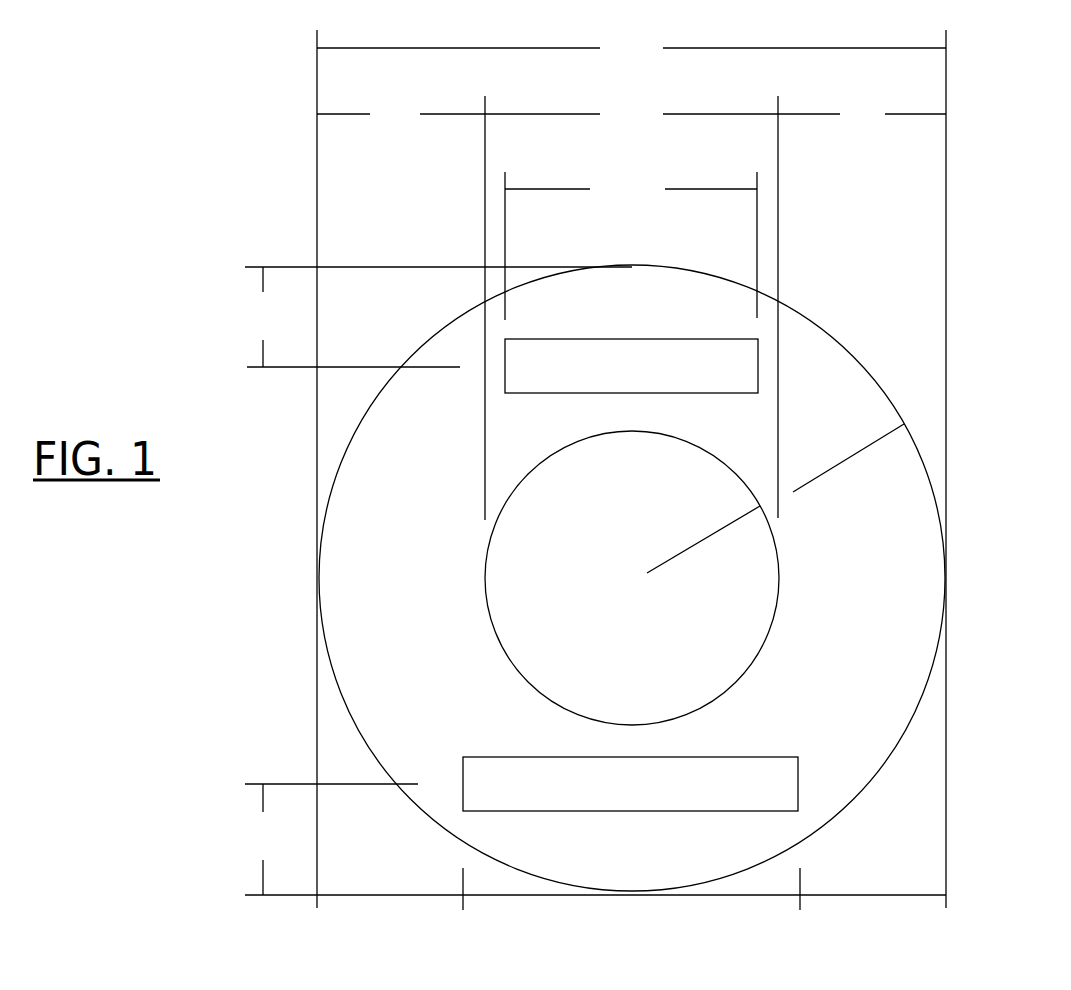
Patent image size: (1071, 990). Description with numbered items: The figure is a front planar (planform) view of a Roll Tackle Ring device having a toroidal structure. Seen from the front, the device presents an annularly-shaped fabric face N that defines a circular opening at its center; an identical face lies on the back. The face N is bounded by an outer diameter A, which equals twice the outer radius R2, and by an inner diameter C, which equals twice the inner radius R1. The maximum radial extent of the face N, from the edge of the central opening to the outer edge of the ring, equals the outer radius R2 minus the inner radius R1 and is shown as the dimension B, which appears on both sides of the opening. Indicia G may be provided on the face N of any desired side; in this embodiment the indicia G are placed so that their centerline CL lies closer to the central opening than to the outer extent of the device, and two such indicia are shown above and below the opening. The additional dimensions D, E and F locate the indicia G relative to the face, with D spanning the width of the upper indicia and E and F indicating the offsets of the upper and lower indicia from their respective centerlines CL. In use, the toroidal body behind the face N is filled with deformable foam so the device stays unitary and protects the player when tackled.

The outer diameter A is at (631, 51).
The maximum radial extent of the face B is at (631, 116).
The inner diameter C is at (631, 116).
The logo box width dimension D is at (631, 189).
The upper logo offset dimension E is at (353, 317).
The lower logo offset dimension F is at (263, 839).
The indicia G is at (677, 578).
The annularly-shaped face N is at (864, 588).
The inner radius R1 is at (701, 539).
The outer radius R2 is at (847, 458).
The centerline CL is at (429, 525).